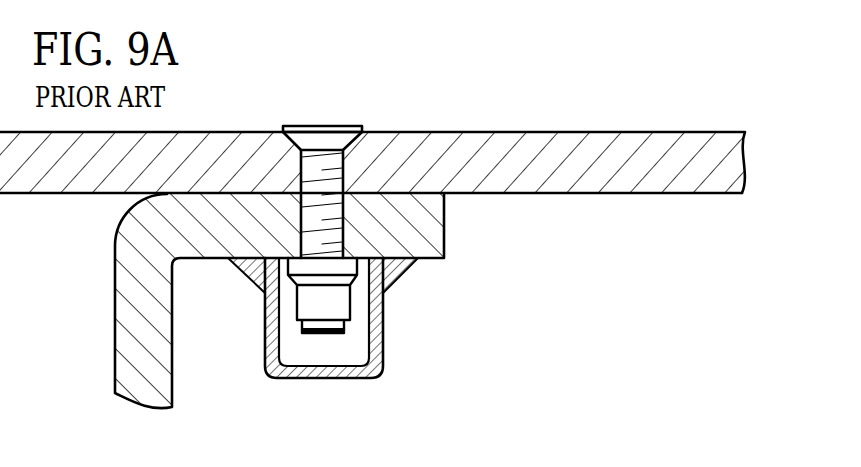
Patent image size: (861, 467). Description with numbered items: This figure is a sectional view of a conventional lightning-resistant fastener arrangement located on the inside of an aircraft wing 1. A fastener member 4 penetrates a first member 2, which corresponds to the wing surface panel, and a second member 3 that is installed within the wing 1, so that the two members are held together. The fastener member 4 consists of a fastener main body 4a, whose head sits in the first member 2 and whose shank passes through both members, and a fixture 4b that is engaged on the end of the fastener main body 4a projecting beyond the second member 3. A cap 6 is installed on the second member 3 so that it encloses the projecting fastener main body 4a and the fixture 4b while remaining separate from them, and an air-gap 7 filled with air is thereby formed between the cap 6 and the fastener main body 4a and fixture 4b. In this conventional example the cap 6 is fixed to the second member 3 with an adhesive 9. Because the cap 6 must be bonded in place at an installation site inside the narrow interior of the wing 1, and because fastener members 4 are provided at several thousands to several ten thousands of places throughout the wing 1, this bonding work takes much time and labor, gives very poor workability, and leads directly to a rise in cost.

The wing 1 is at (687, 146).
The first member 2 is at (717, 170).
The second member 3 is at (115, 363).
The fastener member 4 is at (338, 126).
The fastener main body 4a is at (350, 182).
The fixture 4b is at (315, 306).
The cap 6 is at (383, 356).
The air-gap 7 is at (358, 327).
The adhesive 9 is at (412, 272).